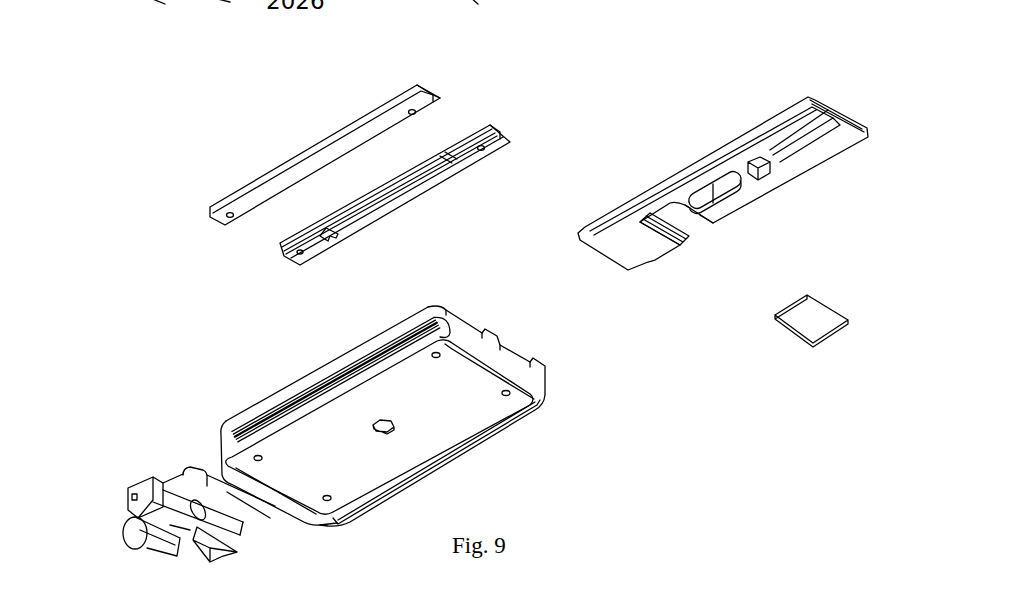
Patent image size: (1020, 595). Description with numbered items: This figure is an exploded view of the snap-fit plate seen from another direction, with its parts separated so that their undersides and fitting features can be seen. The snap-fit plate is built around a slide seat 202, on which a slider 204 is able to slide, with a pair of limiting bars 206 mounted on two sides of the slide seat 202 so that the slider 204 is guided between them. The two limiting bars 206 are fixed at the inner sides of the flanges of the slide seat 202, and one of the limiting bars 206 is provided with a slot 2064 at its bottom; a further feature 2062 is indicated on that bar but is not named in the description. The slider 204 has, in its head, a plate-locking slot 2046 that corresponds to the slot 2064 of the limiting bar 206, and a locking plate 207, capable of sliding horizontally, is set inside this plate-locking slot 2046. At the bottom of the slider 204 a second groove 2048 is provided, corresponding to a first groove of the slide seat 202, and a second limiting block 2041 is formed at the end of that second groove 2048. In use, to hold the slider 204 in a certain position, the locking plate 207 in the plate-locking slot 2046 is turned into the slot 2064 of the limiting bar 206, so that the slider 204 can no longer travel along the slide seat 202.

The slide seat 202 is at (340, 418).
The slider 204 is at (778, 140).
The limiting bar 206 is at (490, 125).
The locking plate 207 is at (808, 323).
The second limiting block 2041 is at (768, 177).
The plate-locking slot 2046 is at (685, 223).
The second groove 2048 is at (767, 135).
The rail groove 2062 is at (448, 160).
The slot 2064 is at (332, 230).